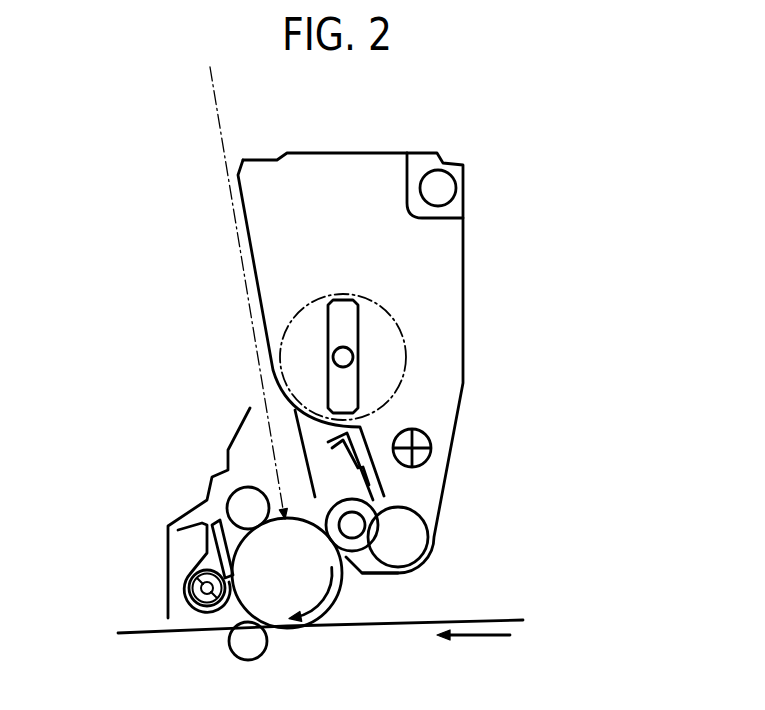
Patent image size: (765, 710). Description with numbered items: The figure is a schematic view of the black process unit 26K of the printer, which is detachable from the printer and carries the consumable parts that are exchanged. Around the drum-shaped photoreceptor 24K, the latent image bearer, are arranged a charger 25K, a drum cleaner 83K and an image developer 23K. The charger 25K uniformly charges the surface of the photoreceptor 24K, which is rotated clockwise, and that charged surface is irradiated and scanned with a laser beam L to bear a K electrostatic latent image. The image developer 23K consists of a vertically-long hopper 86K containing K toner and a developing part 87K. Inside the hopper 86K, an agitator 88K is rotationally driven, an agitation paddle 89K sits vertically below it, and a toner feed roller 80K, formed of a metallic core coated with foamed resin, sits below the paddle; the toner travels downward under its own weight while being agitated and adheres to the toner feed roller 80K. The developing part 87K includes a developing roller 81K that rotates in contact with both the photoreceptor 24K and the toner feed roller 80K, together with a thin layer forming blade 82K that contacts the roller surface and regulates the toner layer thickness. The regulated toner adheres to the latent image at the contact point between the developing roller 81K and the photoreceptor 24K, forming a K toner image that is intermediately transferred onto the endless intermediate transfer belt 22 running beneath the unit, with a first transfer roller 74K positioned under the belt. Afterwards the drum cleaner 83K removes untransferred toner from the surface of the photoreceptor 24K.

The laser beam L is at (215, 97).
The image developer 23K is at (394, 363).
The hopper 86K is at (447, 302).
The agitator 88K is at (340, 303).
The agitation paddle 89K is at (420, 430).
The thin layer forming blade 82K is at (378, 484).
The developing part 87K is at (340, 470).
The developing roller 81K is at (368, 515).
The toner feed roller 80K is at (417, 540).
The process unit 26K is at (386, 588).
The charger 25K is at (229, 482).
The drum cleaner 83K is at (188, 549).
The photoreceptor 24K is at (332, 603).
The first transfer roller 74K is at (265, 640).
The intermediate transfer belt 22 is at (395, 625).